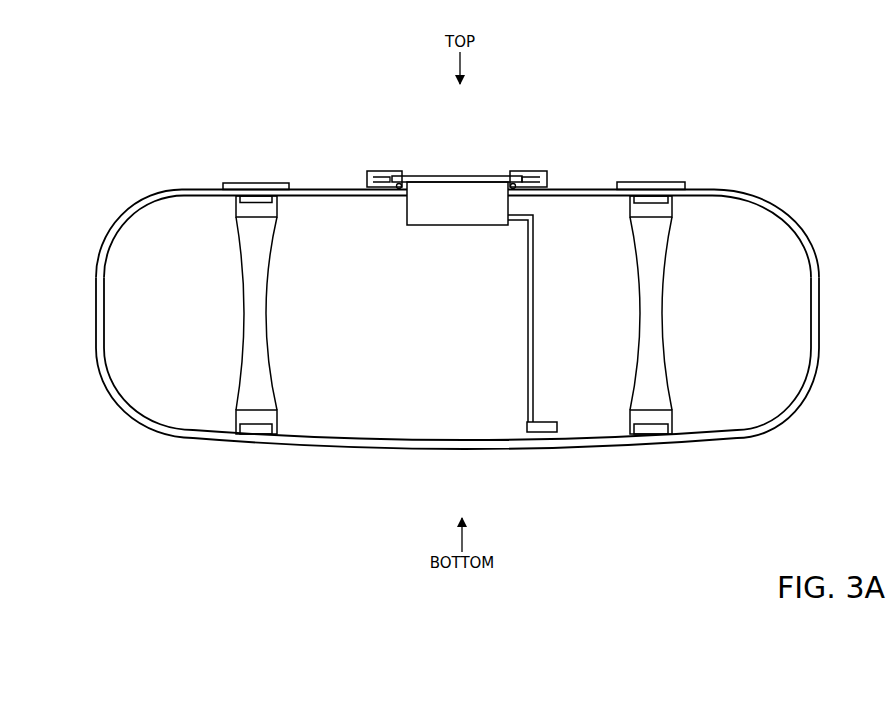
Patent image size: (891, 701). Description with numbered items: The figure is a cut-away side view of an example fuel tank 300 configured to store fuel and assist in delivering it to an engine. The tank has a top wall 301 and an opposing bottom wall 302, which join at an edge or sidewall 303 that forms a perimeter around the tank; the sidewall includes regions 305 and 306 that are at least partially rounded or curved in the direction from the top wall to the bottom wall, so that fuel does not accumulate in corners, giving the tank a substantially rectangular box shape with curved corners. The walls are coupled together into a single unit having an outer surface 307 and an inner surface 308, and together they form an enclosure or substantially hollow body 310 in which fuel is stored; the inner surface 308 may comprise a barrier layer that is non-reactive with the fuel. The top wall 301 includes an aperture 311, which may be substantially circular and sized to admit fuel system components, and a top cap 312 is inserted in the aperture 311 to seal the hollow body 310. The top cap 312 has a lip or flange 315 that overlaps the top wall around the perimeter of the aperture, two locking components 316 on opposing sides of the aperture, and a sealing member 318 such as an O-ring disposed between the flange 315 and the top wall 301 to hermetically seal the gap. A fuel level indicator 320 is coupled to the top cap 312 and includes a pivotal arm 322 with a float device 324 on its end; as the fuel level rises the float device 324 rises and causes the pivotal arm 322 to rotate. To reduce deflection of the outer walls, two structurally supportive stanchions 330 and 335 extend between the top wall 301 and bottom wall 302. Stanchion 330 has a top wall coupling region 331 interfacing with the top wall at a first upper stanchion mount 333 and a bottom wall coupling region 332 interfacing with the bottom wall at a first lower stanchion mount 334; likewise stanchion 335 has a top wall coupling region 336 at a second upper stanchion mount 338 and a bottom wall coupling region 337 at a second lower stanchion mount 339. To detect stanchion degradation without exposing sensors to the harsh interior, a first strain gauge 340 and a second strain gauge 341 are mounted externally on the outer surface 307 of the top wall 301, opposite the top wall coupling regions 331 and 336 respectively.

The fuel tank 300 is at (776, 136).
The top wall 301 is at (206, 186).
The bottom wall 302 is at (456, 447).
The sidewall 303 is at (96, 287).
The rounded region 305 is at (130, 208).
The rounded region 306 is at (126, 411).
The outer surface 307 is at (826, 331).
The inner surface 308 is at (800, 330).
The hollow body 310 is at (166, 238).
The aperture 311 is at (405, 200).
The top cap 312 is at (470, 216).
The flange 315 is at (468, 176).
The locking components 316 is at (402, 172).
The sealing member 318 is at (522, 186).
The fuel level indicator 320 is at (510, 283).
The pivotal arm 322 is at (534, 241).
The float device 324 is at (541, 421).
The stanchion 330 is at (266, 275).
The top wall coupling region 331 is at (277, 211).
The bottom wall coupling region 332 is at (277, 418).
The first upper stanchion mount 333 is at (243, 203).
The first lower stanchion mount 334 is at (243, 427).
The stanchion 335 is at (636, 274).
The top wall coupling region 336 is at (630, 203).
The bottom wall coupling region 337 is at (630, 425).
The second upper stanchion mount 338 is at (663, 204).
The second lower stanchion mount 339 is at (663, 425).
The first strain gauge 340 is at (256, 182).
The second strain gauge 341 is at (653, 181).